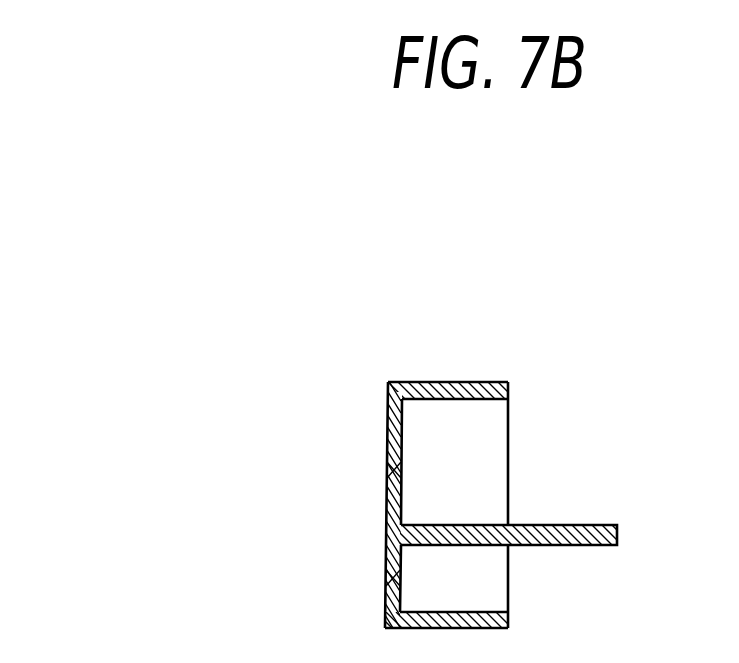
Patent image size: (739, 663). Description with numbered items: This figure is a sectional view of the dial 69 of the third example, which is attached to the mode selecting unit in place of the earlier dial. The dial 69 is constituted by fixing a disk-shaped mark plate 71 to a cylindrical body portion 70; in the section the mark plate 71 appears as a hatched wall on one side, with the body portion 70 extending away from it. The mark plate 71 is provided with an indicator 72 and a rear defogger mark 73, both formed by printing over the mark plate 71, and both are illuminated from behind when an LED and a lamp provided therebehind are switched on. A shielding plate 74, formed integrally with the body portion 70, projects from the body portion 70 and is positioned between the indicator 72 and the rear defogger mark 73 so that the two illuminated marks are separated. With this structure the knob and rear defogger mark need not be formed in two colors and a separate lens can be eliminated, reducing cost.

The dial 69 is at (457, 252).
The body portion 70 is at (432, 381).
The mark plate 71 is at (387, 418).
The indicator 72 is at (385, 580).
The rear defogger mark 73 is at (386, 474).
The shielding plate 74 is at (580, 525).